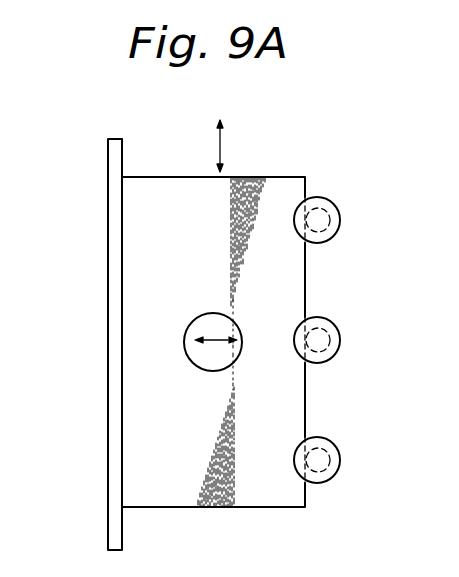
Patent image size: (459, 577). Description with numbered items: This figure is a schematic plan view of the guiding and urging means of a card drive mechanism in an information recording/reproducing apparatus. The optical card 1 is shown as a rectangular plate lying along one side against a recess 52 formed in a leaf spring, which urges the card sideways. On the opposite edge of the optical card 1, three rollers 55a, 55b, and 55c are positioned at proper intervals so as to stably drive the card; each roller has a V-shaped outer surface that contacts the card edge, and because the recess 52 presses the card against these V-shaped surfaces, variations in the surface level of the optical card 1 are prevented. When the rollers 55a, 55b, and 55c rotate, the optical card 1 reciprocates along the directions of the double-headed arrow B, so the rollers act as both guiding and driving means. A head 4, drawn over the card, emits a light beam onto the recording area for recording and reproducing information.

The optical card 1 is at (176, 509).
The head 4 is at (212, 312).
The recess 52 is at (115, 451).
The roller 55a is at (340, 458).
The roller 55b is at (340, 338).
The roller 55c is at (340, 217).
The double-headed arrow B is at (227, 146).